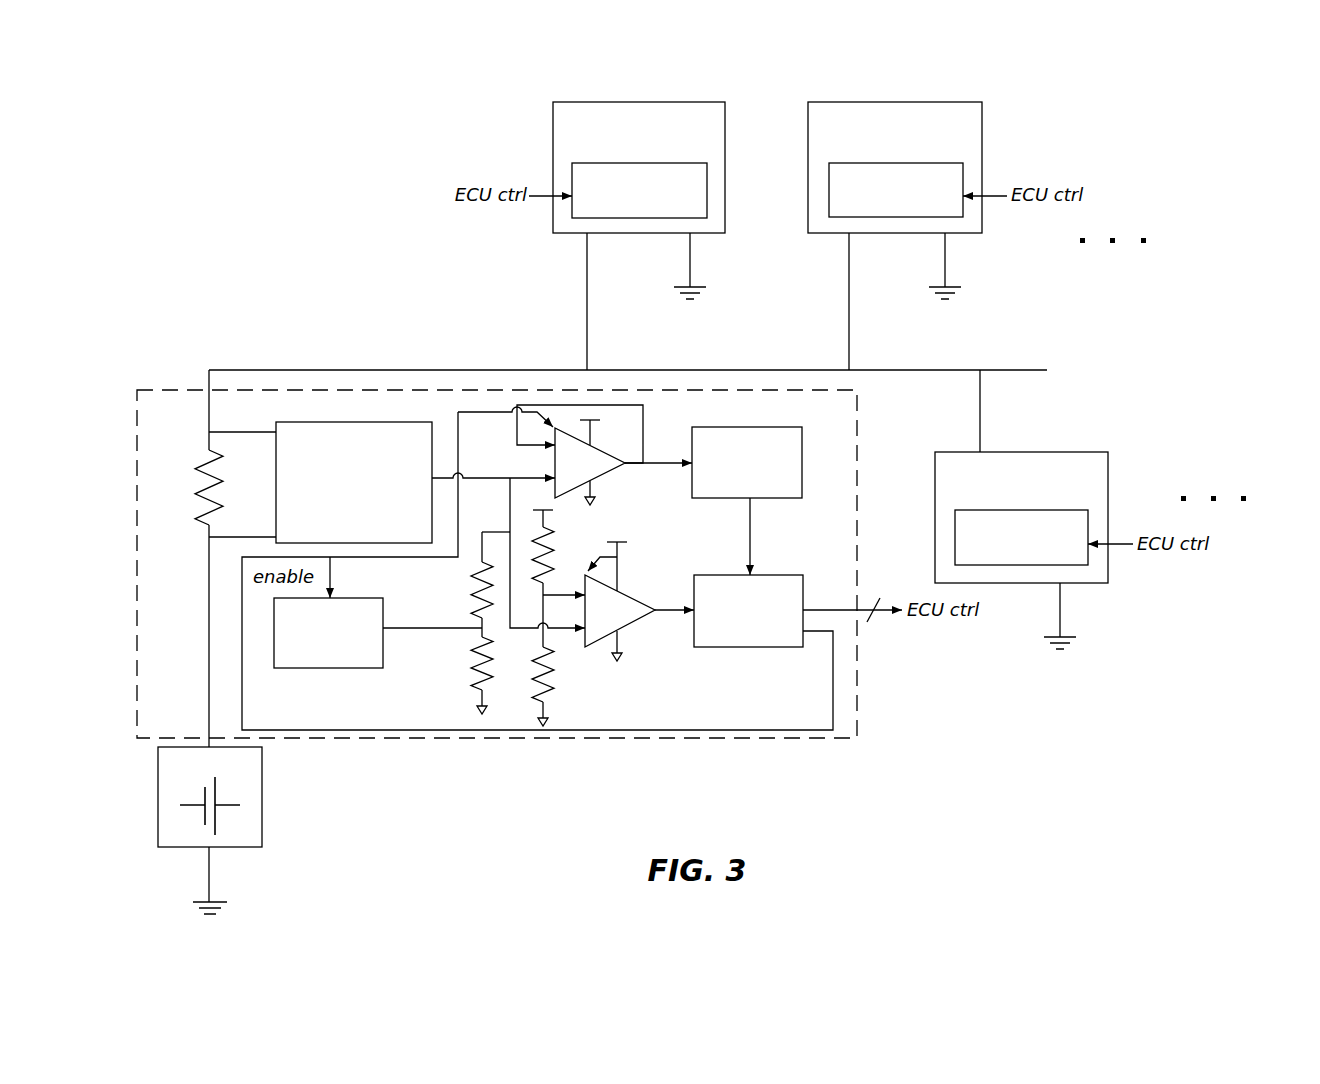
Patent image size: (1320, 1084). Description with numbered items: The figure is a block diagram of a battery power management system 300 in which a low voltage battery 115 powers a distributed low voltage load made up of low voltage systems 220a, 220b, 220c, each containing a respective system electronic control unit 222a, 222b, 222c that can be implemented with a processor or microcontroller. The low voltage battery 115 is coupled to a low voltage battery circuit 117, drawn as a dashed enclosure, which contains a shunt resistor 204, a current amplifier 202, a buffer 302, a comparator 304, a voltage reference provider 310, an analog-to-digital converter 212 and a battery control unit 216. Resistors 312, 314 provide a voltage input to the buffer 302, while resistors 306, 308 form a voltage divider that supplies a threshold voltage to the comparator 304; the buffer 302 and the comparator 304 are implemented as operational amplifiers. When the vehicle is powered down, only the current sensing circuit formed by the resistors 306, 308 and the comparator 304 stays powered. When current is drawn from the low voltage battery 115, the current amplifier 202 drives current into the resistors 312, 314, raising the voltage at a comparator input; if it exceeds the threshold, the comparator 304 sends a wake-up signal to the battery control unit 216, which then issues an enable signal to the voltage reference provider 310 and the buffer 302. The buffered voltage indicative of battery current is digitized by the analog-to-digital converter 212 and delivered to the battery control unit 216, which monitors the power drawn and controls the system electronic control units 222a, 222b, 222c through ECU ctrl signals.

The battery power management system 300 is at (1197, 155).
The low voltage battery circuit 117 is at (857, 500).
The shunt resistor 204 is at (183, 484).
The current amplifier 202 is at (354, 482).
The buffer 302 is at (608, 472).
The comparator 304 is at (637, 590).
The resistor 306 is at (563, 558).
The resistor 308 is at (568, 667).
The voltage reference provider 310 is at (328, 633).
The resistor 312 is at (462, 578).
The resistor 314 is at (458, 662).
The analog-to-digital converter 212 is at (747, 462).
The battery control unit 216 is at (748, 611).
The low voltage system 220a is at (639, 236).
The low voltage system 220b is at (895, 236).
The low voltage system 220c is at (1021, 509).
The system electronic control unit 222a is at (639, 190).
The system electronic control unit 222b is at (896, 190).
The system electronic control unit 222c is at (1021, 537).
The low voltage battery 115 is at (210, 797).